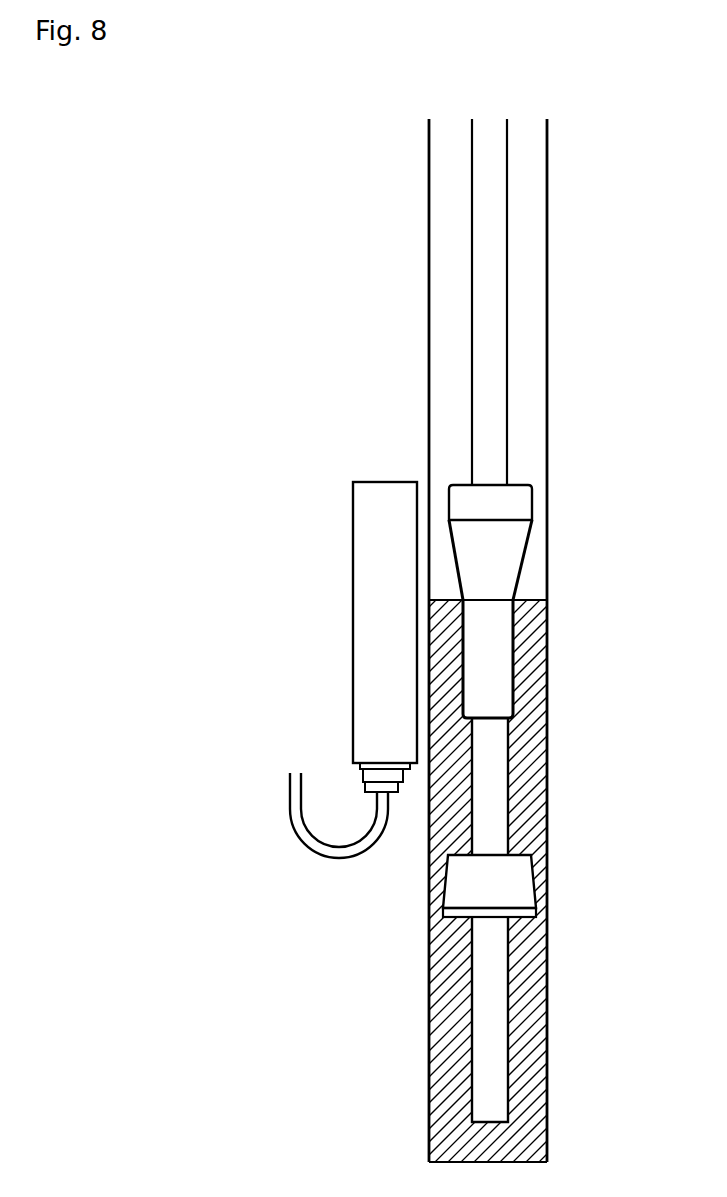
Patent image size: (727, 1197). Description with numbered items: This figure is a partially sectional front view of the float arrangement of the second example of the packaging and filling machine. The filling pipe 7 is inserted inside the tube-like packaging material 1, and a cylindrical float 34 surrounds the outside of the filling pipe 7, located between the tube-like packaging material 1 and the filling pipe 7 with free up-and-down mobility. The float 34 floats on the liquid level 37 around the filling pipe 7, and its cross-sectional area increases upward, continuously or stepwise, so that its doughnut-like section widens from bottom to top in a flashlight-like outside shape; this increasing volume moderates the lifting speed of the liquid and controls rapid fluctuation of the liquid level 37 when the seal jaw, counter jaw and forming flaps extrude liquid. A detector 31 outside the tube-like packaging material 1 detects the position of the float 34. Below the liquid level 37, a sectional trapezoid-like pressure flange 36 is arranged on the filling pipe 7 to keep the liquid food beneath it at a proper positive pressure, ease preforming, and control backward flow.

The tube-like packaging material 1 is at (423, 244).
The filling pipe 7 is at (505, 335).
The detector 31 is at (353, 478).
The float 34 is at (533, 530).
The pressure flange 36 is at (537, 910).
The liquid level 37 is at (547, 603).